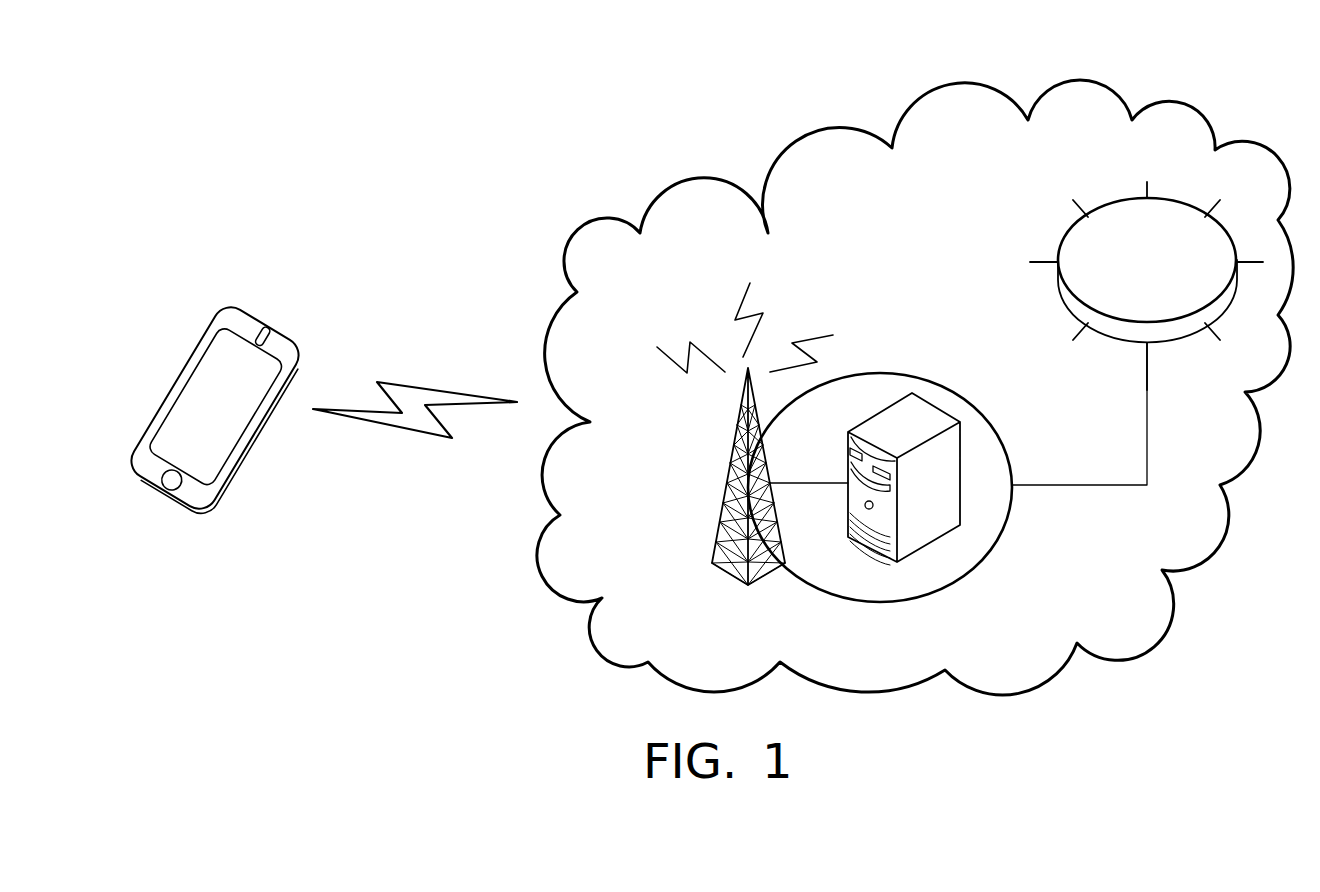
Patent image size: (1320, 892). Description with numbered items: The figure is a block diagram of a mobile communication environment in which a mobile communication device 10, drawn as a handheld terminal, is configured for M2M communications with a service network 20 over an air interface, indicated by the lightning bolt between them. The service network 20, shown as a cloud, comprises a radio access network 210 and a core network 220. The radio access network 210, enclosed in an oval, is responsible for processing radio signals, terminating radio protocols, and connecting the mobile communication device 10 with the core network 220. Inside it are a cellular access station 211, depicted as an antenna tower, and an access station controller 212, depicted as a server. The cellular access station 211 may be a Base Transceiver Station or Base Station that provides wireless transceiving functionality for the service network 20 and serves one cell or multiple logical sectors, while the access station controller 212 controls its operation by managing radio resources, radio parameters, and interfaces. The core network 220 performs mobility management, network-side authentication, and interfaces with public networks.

The mobile communication device 10 is at (170, 501).
The service network 20 is at (835, 125).
The radio access network 210 is at (970, 568).
The cellular access station 211 is at (727, 480).
The access station controller 212 is at (937, 408).
The core network 220 is at (1067, 233).